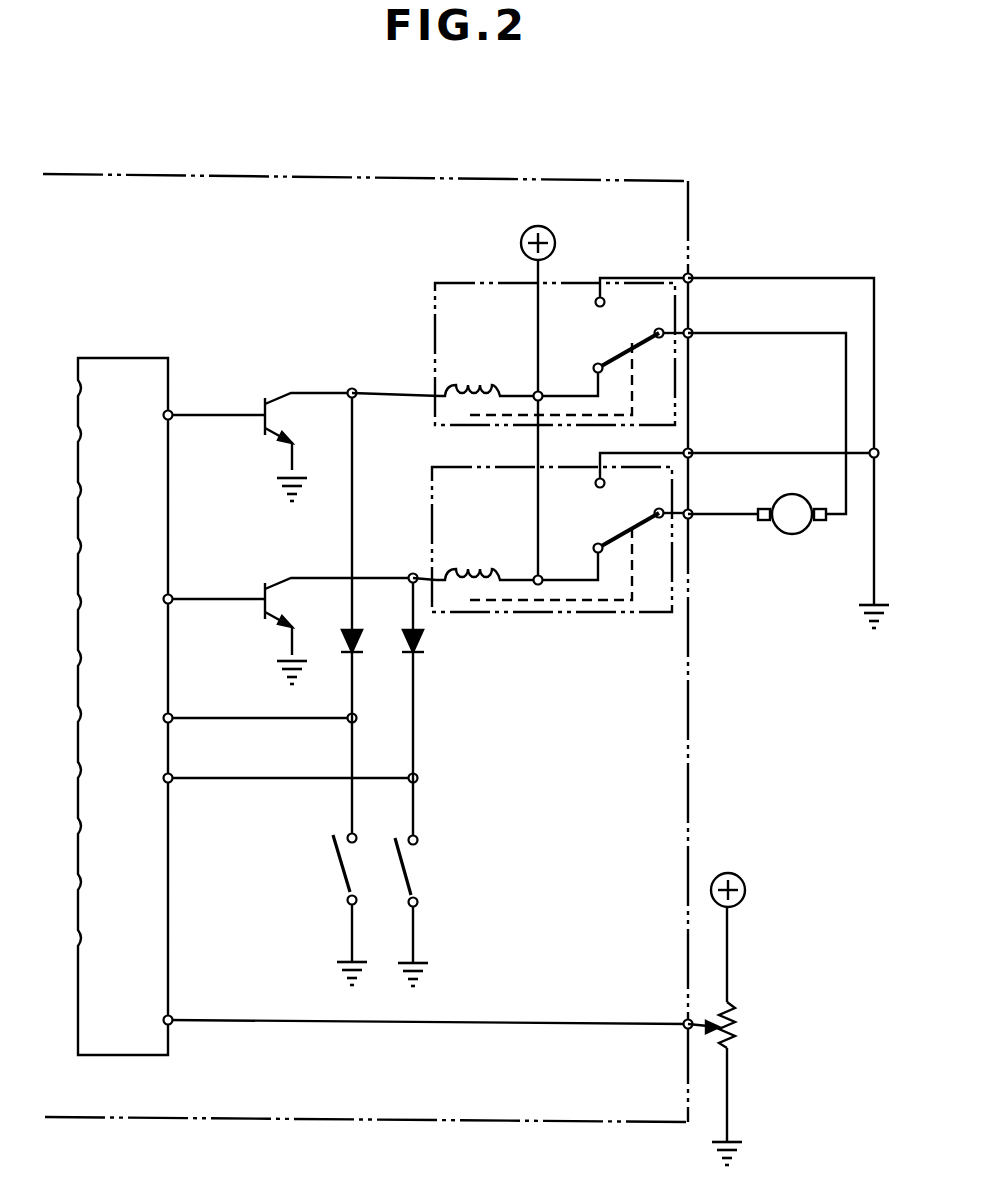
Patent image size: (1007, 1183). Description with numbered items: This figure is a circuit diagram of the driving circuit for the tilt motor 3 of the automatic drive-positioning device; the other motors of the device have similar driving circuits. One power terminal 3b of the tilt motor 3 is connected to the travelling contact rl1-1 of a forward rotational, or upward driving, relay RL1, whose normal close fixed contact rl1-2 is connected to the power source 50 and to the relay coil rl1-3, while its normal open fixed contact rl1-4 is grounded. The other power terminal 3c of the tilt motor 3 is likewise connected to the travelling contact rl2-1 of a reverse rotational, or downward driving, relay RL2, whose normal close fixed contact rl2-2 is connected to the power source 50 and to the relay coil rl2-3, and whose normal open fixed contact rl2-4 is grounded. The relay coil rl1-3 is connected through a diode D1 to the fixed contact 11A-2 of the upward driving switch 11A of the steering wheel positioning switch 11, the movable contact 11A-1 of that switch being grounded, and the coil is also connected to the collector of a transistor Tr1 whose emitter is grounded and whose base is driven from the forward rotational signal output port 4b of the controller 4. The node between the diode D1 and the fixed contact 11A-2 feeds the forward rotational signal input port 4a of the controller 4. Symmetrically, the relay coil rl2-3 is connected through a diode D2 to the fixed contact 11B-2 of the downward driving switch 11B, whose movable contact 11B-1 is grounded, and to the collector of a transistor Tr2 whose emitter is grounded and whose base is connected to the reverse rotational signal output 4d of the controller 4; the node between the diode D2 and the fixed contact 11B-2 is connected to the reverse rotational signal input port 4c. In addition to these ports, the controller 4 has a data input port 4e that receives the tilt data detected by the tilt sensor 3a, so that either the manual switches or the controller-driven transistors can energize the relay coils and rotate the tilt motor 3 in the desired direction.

The controller 4 is at (123, 706).
The forward rotational signal input port 4a is at (172, 718).
The forward rotational signal output port 4b is at (172, 413).
The reverse rotational signal input port 4c is at (172, 778).
The reverse rotational signal output 4d is at (172, 598).
The data input port 4e is at (172, 1024).
The transistor Tr1 is at (310, 447).
The transistor Tr2 is at (339, 631).
The diode D1 is at (366, 640).
The diode D2 is at (427, 640).
The steering wheel positioning switch 11 is at (354, 903).
The upward driving switch 11A is at (281, 896).
The downward driving switch 11B is at (375, 904).
The movable contact 11A-1 is at (338, 858).
The fixed contact 11A-2 is at (346, 835).
The movable contact 11B-1 is at (395, 874).
The fixed contact 11B-2 is at (416, 836).
The power source 50 is at (521, 243).
The forward rotational relay RL1 is at (561, 325).
The reverse rotational relay RL2 is at (560, 564).
The travelling contact rl1-1 is at (656, 330).
The normal close fixed contact rl1-2 is at (600, 364).
The relay coil rl1-3 is at (456, 388).
The normal open fixed contact rl1-4 is at (596, 303).
The travelling contact rl2-1 is at (656, 510).
The normal close fixed contact rl2-2 is at (594, 546).
The relay coil rl2-3 is at (456, 572).
The normal open fixed contact rl2-4 is at (596, 485).
The tilt motor 3 is at (779, 542).
The tilt sensor 3a is at (739, 1025).
The power terminal 3b is at (820, 524).
The power terminal 3c is at (763, 524).